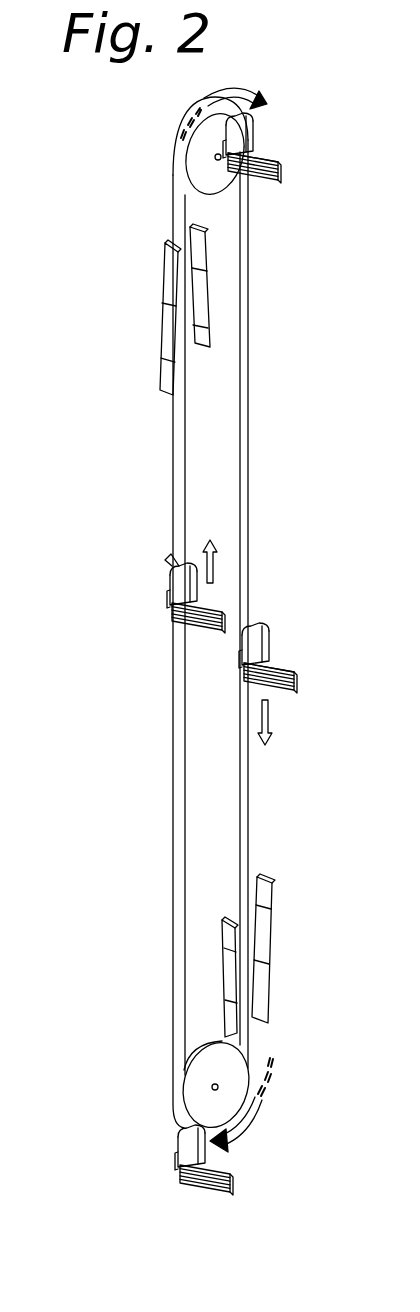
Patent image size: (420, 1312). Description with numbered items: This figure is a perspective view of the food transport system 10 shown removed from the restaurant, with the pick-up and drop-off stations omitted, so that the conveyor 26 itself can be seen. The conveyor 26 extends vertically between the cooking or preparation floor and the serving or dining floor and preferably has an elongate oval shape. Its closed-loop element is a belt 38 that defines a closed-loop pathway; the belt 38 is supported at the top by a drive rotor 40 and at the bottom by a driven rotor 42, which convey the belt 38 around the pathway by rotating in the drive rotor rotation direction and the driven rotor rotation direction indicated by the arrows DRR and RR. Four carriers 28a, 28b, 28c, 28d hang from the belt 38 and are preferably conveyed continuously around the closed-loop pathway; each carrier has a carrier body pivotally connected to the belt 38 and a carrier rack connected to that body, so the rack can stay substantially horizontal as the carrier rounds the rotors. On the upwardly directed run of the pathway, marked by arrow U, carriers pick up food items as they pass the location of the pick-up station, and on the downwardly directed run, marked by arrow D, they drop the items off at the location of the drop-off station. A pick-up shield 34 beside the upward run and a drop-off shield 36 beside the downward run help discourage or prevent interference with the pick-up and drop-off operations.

The food transport system 10 is at (227, 618).
The conveyor 26 is at (259, 612).
The carrier 28a is at (297, 130).
The carrier 28b is at (166, 611).
The carrier 28c is at (171, 1158).
The carrier 28d is at (312, 660).
The pick-up shield 34 is at (153, 290).
The drop-off shield 36 is at (287, 960).
The belt 38 is at (250, 478).
The drive rotor 40 is at (197, 168).
The driven rotor 42 is at (233, 1087).
The drive rotor rotation direction DRR is at (224, 100).
The driven rotor rotation direction RR is at (242, 1107).
The upward direction U is at (218, 561).
The downward direction D is at (271, 722).